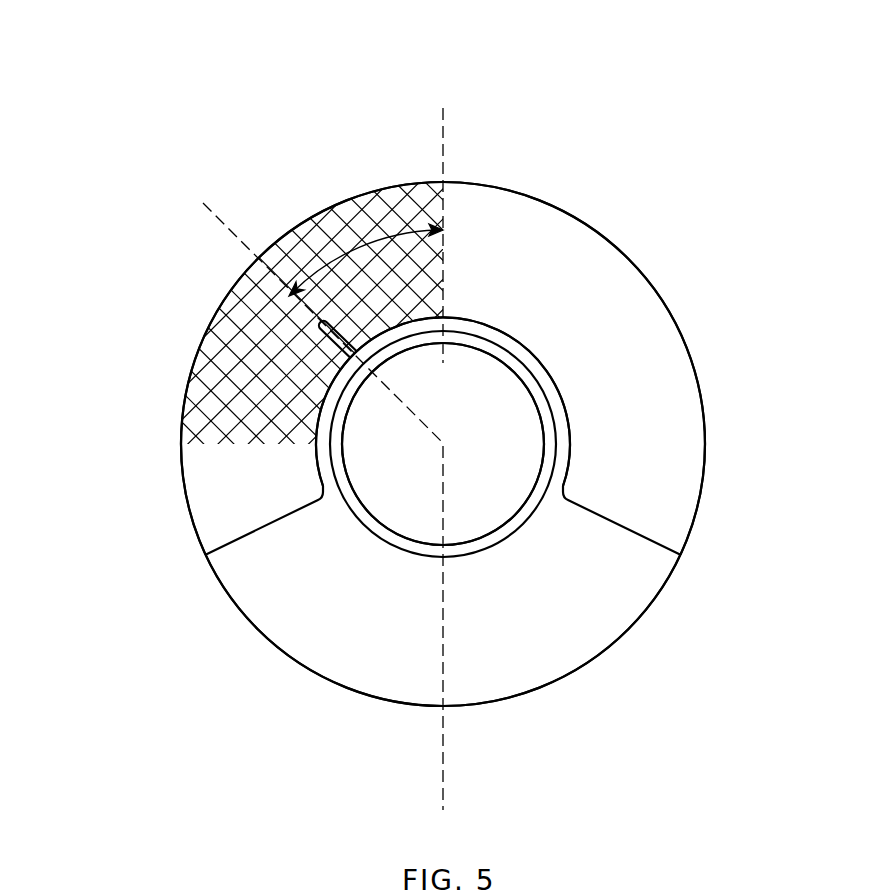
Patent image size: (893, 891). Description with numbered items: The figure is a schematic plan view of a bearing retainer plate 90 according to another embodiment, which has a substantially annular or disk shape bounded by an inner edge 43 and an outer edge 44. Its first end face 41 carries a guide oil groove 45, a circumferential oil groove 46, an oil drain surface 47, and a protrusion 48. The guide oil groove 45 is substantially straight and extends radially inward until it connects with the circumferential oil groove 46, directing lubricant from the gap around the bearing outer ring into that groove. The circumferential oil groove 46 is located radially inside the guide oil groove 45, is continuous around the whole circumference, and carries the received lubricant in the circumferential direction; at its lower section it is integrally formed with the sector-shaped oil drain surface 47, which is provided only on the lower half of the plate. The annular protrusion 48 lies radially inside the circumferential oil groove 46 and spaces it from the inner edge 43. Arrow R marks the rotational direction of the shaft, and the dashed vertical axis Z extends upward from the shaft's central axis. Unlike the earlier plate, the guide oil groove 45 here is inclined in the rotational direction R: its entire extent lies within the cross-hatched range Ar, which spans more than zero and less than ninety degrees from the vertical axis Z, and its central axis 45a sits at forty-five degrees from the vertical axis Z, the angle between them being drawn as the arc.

The bearing retainer plate 90 is at (128, 67).
The first end face 41 is at (612, 278).
The inner edge 43 is at (538, 478).
The outer edge 44 is at (197, 355).
The guide oil groove 45 is at (320, 340).
The central axis 45a is at (392, 371).
The circumferential oil groove 46 is at (329, 428).
The oil drain surface 47 is at (260, 603).
The protrusion 48 is at (473, 547).
The range Ar is at (197, 413).
The rotational direction R is at (420, 69).
The vertical axis Z is at (447, 142).